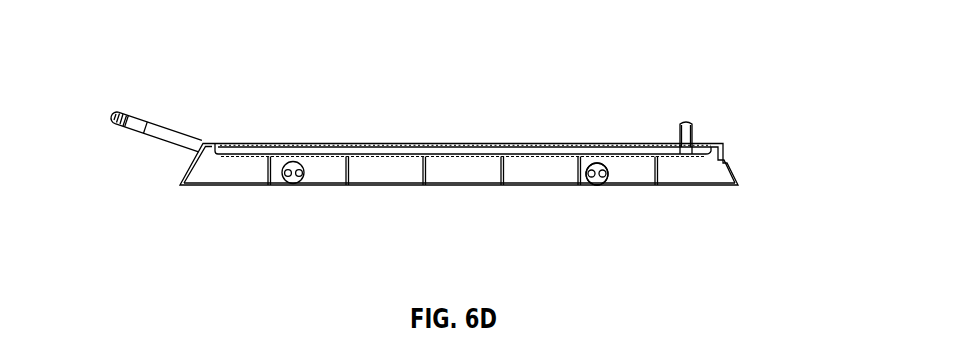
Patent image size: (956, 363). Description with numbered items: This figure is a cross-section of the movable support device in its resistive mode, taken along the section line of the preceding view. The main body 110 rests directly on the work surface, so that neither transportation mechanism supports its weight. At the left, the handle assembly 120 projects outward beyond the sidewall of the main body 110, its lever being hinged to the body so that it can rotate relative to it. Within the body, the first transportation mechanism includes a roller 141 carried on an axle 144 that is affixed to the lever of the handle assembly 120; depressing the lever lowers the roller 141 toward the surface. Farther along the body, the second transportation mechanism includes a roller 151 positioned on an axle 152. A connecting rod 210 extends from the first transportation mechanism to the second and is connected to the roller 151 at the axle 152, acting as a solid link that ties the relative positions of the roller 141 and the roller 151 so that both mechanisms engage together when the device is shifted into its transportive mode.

The main body 110 is at (718, 141).
The handle assembly 120 is at (163, 123).
The roller 141 is at (292, 186).
The axle 144 is at (287, 164).
The roller 151 is at (598, 186).
The axle 152 is at (602, 164).
The connecting rod 210 is at (593, 186).